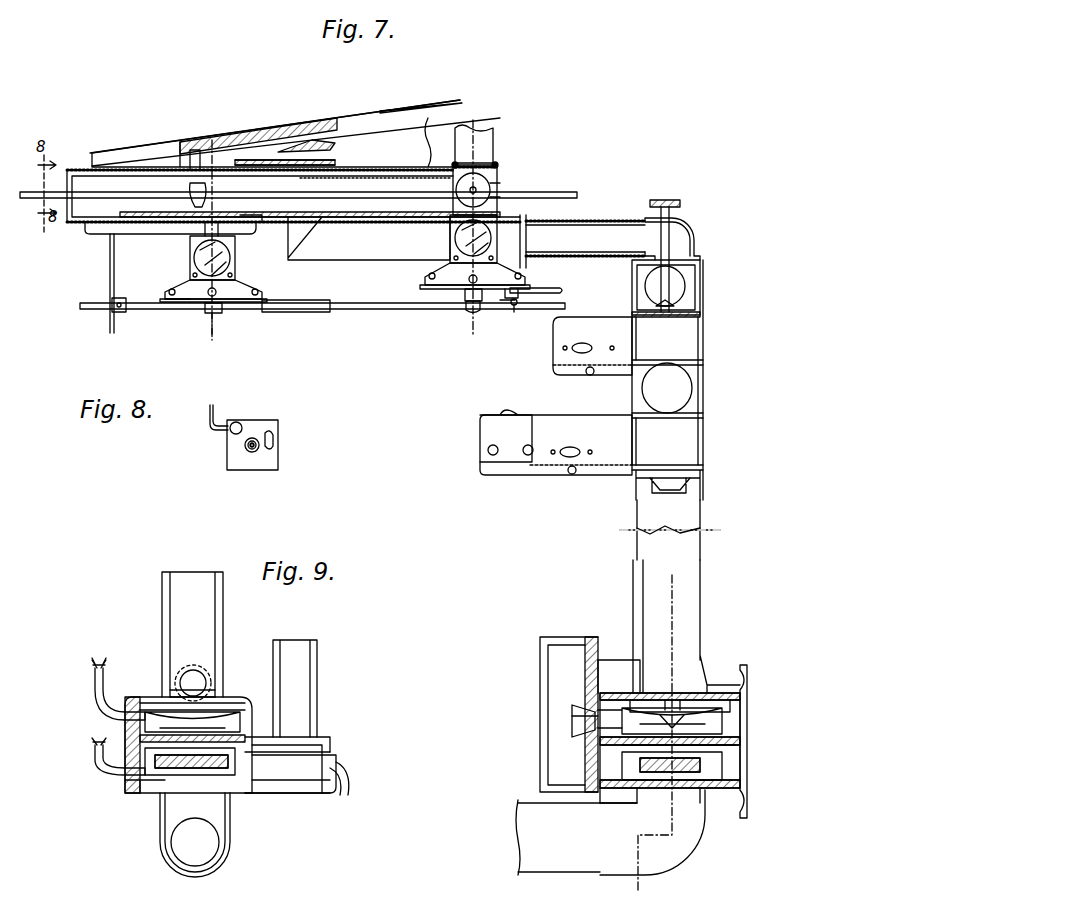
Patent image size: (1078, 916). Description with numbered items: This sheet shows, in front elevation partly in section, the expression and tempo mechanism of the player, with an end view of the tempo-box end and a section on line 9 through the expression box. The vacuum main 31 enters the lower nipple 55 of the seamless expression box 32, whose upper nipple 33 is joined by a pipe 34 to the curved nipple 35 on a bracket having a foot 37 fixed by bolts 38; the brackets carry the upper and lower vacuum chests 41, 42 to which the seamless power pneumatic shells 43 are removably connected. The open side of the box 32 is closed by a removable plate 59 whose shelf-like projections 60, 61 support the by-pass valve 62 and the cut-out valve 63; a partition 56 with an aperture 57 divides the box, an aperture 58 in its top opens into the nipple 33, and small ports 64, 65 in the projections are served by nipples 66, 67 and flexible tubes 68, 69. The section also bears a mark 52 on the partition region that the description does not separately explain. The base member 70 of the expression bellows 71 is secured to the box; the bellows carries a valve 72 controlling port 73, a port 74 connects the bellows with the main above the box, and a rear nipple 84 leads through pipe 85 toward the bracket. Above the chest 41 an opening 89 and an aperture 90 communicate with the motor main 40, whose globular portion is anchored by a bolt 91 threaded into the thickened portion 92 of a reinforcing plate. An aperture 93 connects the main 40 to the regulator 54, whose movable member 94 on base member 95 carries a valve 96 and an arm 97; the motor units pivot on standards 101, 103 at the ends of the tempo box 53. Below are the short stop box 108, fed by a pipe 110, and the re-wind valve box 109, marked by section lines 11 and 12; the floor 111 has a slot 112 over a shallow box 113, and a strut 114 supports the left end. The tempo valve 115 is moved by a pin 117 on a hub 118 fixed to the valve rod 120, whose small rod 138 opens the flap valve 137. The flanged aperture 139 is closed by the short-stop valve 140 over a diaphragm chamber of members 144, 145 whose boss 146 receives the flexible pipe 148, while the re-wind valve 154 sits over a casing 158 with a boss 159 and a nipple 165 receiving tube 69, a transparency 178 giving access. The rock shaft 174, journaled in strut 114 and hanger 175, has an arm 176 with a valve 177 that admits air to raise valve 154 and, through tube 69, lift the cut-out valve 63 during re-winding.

In FIG. 7, the section line 9 is at (651, 736).
In FIG. 7, the axis of reel 11 is at (215, 337).
In FIG. 7, the cylinder / axis 12 is at (478, 308).
In FIG. 7, the vacuum main 31 is at (520, 857).
In FIG. 7, the expression box 32 is at (747, 680).
In FIG. 9, the expression box 32 is at (232, 700).
In FIG. 7, the upper nipple 33 is at (705, 640).
In FIG. 9, the upper nipple 33 is at (225, 635).
In FIG. 7, the pipe 34 is at (703, 550).
In FIG. 7, the curved nipple 35 is at (692, 388).
In FIG. 7, the foot 37 is at (702, 490).
In FIG. 7, the bolts 38 is at (655, 490).
In FIG. 7, the motor main 40 is at (600, 222).
In FIG. 7, the upper vacuum chest 41 is at (615, 317).
In FIG. 7, the lower vacuum chest 42 is at (628, 418).
In FIG. 7, the power pneumatic shells 43 is at (500, 430).
In FIG. 9, the partition 52 is at (192, 741).
In FIG. 8, the tempo box 53 is at (275, 462).
In FIG. 7, the regulator 54 is at (440, 125).
In FIG. 7, the lower nipple 55 is at (690, 850).
In FIG. 9, the lower nipple 55 is at (222, 862).
In FIG. 7, the partition 56 is at (740, 745).
In FIG. 9, the partition 56 is at (252, 752).
In FIG. 7, the aperture 57 is at (740, 740).
In FIG. 7, the top aperture 58 is at (672, 700).
In FIG. 9, the top aperture 58 is at (180, 670).
In FIG. 7, the removable plate 59 is at (700, 314).
In FIG. 9, the removable plate 59 is at (130, 790).
In FIG. 7, the upper projection 60 is at (722, 712).
In FIG. 9, the upper projection 60 is at (240, 722).
In FIG. 7, the lower projection 61 is at (615, 790).
In FIG. 9, the lower projection 61 is at (248, 790).
In FIG. 7, the by-pass valve 62 is at (712, 700).
In FIG. 9, the by-pass valve 62 is at (222, 703).
In FIG. 7, the cut-out valve 63 is at (722, 762).
In FIG. 9, the cut-out valve 63 is at (235, 765).
In FIG. 7, the port 64 is at (715, 720).
In FIG. 9, the port 64 is at (155, 712).
In FIG. 7, the port 65 is at (668, 780).
In FIG. 9, the port 65 is at (155, 775).
In FIG. 9, the tubular nipple 66 is at (93, 712).
In FIG. 9, the tubular nipple 67 is at (92, 770).
In FIG. 9, the flexible tube 68 is at (92, 680).
In FIG. 7, the flexible tube 69 is at (562, 291).
In FIG. 9, the flexible tube 69 is at (93, 748).
In FIG. 7, the base member 70 is at (592, 637).
In FIG. 7, the expression bellows 71 is at (545, 648).
In FIG. 7, the valve 72 is at (595, 712).
In FIG. 7, the port 73 is at (590, 720).
In FIG. 7, the port 74 is at (612, 665).
In FIG. 9, the port 74 is at (205, 675).
In FIG. 9, the rear nipple 84 is at (332, 728).
In FIG. 9, the pipe 85 is at (320, 682).
In FIG. 7, the opening 89 is at (678, 282).
In FIG. 7, the aperture 90 is at (697, 248).
In FIG. 7, the bolt 91 is at (668, 228).
In FIG. 7, the thickened portion 92 is at (678, 306).
In FIG. 7, the aperture 93 is at (325, 170).
In FIG. 7, the movable member 94 is at (345, 122).
In FIG. 7, the base member 95 is at (385, 165).
In FIG. 7, the valve 96 is at (300, 140).
In FIG. 7, the arm 97 is at (428, 110).
In FIG. 8, the standard 101 is at (212, 405).
In FIG. 7, the hollow standard 103 is at (493, 148).
In FIG. 7, the short stop box 108 is at (190, 258).
In FIG. 7, the re-wind valve box 109 is at (450, 240).
In FIG. 7, the pipe 110 is at (190, 184).
In FIG. 7, the floor 111 is at (348, 217).
In FIG. 7, the slot 112 is at (150, 222).
In FIG. 7, the shallow box 113 is at (100, 234).
In FIG. 7, the strut 114 is at (108, 290).
In FIG. 7, the tempo valve 115 is at (165, 236).
In FIG. 7, the pin 117 is at (215, 193).
In FIG. 7, the hub 118 is at (200, 150).
In FIG. 7, the valve rod 120 is at (570, 192).
In FIG. 8, the valve rod 120 is at (245, 448).
In FIG. 8, the flap valve 137 is at (273, 448).
In FIG. 7, the rod 138 is at (135, 201).
In FIG. 7, the flanged aperture 139 is at (258, 232).
In FIG. 7, the short-stop valve 140 is at (232, 258).
In FIG. 7, the upper member 144 is at (265, 292).
In FIG. 7, the lower member 145 is at (195, 302).
In FIG. 7, the boss 146 is at (225, 313).
In FIG. 7, the pipe 148 is at (318, 314).
In FIG. 7, the re-wind valve 154 is at (500, 204).
In FIG. 7, the casing 158 is at (425, 285).
In FIG. 7, the boss 159 is at (515, 306).
In FIG. 7, the nipple 165 is at (526, 310).
In FIG. 7, the rock shaft 174 is at (406, 310).
In FIG. 7, the hanger 175 is at (528, 278).
In FIG. 7, the arm 176 is at (480, 312).
In FIG. 7, the valve 177 is at (468, 305).
In FIG. 7, the transparency 178 is at (500, 163).